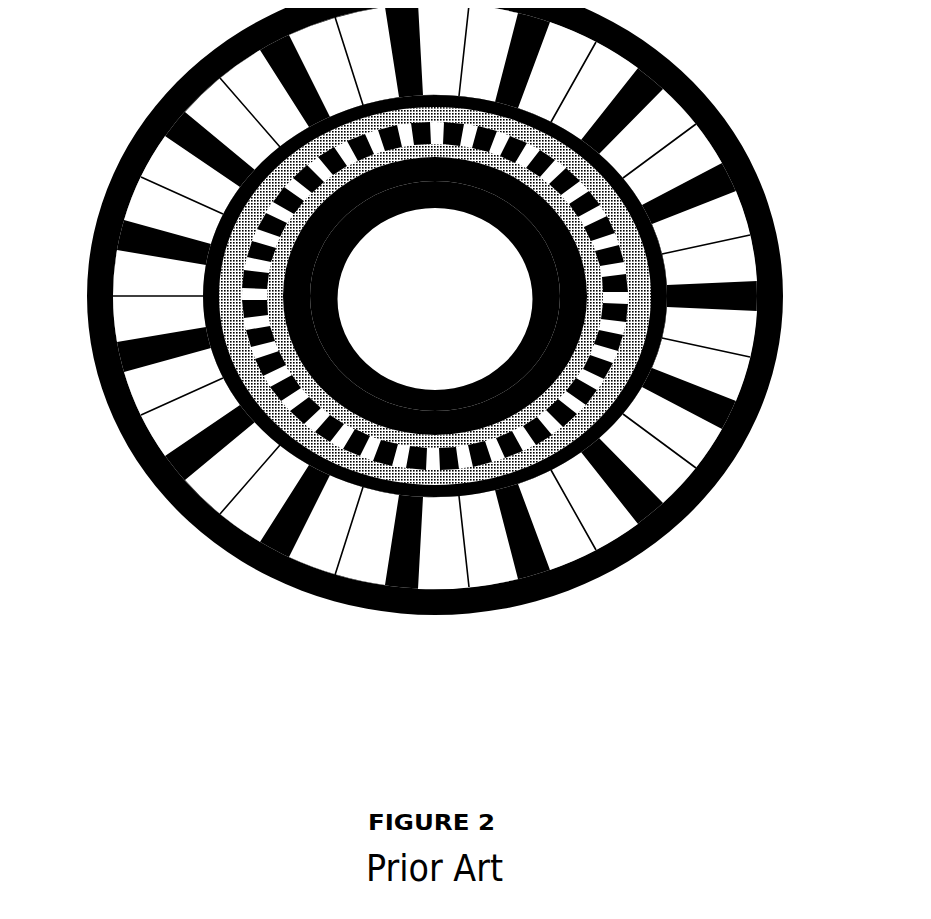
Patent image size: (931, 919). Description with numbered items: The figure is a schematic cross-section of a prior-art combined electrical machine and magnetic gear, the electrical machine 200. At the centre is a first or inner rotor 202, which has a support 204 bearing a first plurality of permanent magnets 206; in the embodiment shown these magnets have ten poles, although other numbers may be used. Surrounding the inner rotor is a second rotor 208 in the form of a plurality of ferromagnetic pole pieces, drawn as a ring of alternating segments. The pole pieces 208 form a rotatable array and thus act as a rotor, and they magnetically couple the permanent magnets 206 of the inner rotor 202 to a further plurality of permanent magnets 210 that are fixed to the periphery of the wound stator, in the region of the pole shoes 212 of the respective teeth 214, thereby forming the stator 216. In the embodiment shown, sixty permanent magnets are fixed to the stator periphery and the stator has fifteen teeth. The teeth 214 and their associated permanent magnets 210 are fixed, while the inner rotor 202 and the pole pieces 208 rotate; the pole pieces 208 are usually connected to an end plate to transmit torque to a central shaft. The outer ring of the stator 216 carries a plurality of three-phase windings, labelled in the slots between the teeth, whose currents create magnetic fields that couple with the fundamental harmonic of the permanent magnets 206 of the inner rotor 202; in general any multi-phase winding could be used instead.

The electrical machine 200 is at (412, 339).
The inner rotor 202 is at (534, 382).
The support 204 is at (330, 268).
The permanent magnets 206 is at (327, 310).
The pole pieces 208 is at (298, 140).
The permanent magnets 210 is at (228, 196).
The pole shoes 212 is at (410, 311).
The teeth 214 is at (397, 298).
The stator 216 is at (410, 311).